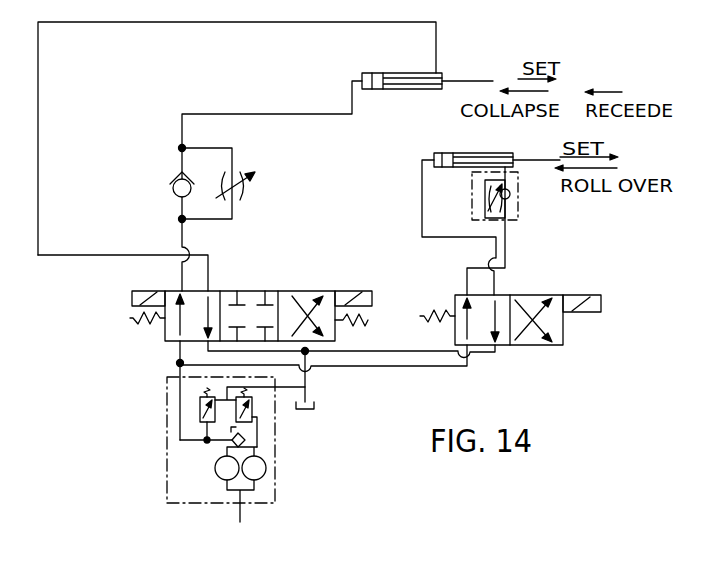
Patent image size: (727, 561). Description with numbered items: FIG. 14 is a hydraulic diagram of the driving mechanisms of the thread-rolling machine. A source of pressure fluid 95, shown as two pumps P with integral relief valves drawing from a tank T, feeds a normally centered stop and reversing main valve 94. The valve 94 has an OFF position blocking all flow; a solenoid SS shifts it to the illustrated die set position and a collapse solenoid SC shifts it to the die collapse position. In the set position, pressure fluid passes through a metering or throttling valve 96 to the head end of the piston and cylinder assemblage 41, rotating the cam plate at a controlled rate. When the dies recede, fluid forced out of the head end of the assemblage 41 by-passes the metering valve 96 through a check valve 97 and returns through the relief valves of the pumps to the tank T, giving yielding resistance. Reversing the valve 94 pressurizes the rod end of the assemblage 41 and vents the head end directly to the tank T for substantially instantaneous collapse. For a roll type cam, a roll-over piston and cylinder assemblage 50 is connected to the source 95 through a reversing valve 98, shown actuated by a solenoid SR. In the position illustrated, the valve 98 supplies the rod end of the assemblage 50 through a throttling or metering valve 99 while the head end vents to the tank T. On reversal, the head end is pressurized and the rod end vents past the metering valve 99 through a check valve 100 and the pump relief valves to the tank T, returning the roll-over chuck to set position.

The piston and cylinder assemblage 41 is at (393, 90).
The roll-over piston and cylinder assemblage 50 is at (470, 153).
The stop and reversing main valve 94 is at (247, 289).
The source of pressure fluid 95 is at (276, 460).
The metering or throttling valve 96 is at (248, 172).
The check valve 97 is at (172, 176).
The reversing valve 98 is at (535, 294).
The throttling or metering valve 99 is at (481, 200).
The check valve 100 is at (512, 196).
The solenoid SS is at (142, 290).
The collapse solenoid SC is at (353, 290).
The solenoid SR is at (590, 314).
The tank T is at (308, 401).